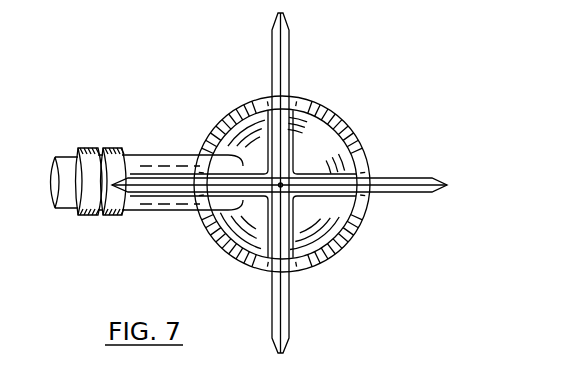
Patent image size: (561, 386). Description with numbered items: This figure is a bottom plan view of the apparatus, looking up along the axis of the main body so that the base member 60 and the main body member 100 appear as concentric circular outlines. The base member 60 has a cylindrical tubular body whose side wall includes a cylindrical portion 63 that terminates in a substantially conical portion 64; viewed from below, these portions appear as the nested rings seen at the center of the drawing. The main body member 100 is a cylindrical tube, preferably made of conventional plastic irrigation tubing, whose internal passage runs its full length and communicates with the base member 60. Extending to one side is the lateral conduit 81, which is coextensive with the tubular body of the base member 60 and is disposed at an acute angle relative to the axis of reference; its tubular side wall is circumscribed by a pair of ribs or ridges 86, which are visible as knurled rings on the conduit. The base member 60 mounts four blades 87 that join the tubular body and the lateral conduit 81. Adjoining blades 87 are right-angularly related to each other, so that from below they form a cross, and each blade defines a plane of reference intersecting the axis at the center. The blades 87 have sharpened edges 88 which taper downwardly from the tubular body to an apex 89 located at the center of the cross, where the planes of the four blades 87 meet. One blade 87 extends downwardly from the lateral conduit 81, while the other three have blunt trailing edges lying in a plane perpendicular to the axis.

The base member 60 is at (316, 84).
The main body member 100 is at (333, 112).
The cylindrical portion 63 is at (347, 135).
The conical portion 64 is at (308, 207).
The lateral conduit 81 is at (148, 210).
The ribs or ridges 86 is at (104, 150).
The blades 87 is at (272, 68).
The sharpened edges 88 is at (281, 47).
The apex 89 is at (283, 183).